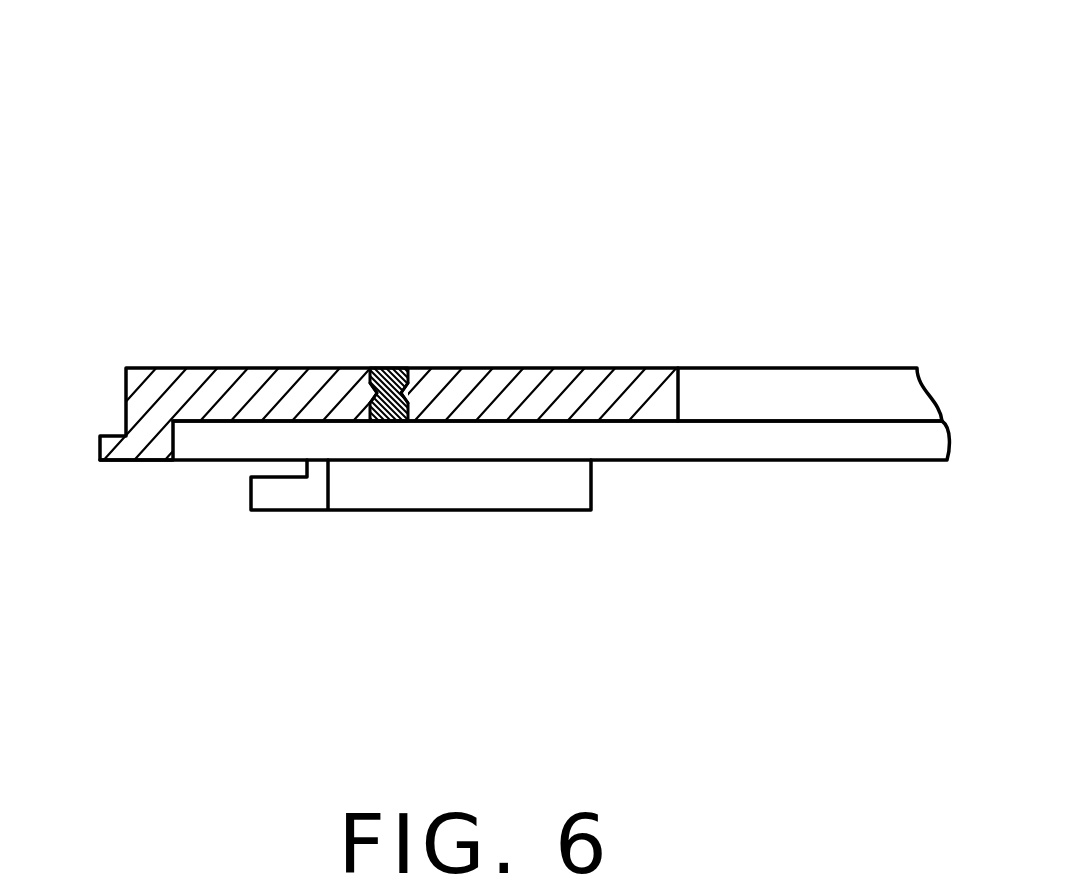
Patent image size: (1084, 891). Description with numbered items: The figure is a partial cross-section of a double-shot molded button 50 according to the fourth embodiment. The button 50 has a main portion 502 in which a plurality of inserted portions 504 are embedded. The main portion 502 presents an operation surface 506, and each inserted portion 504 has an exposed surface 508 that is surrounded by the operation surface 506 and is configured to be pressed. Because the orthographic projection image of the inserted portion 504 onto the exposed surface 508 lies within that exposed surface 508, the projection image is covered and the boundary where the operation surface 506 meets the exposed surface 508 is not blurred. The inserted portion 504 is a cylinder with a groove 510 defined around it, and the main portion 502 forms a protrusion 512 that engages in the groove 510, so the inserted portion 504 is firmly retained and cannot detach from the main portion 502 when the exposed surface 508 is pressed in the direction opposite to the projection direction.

The double-shot molded button 50 is at (503, 65).
The main portion 502 is at (250, 380).
The inserted portion 504 is at (385, 405).
The operation surface 506 is at (581, 368).
The exposed surface 508 is at (392, 372).
The groove 510 is at (402, 395).
The protrusion 512 is at (373, 393).